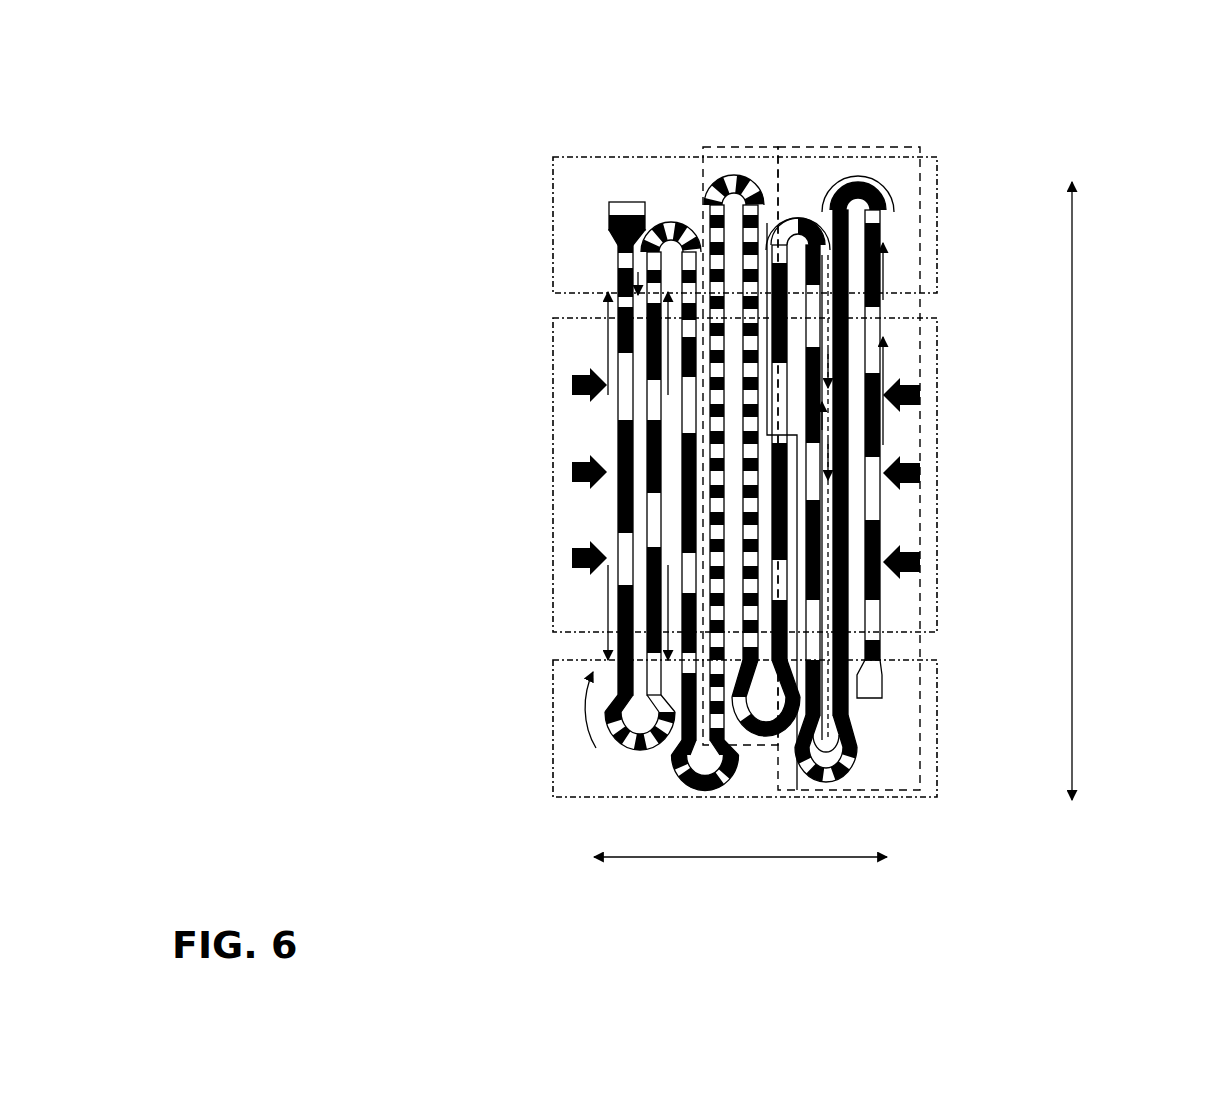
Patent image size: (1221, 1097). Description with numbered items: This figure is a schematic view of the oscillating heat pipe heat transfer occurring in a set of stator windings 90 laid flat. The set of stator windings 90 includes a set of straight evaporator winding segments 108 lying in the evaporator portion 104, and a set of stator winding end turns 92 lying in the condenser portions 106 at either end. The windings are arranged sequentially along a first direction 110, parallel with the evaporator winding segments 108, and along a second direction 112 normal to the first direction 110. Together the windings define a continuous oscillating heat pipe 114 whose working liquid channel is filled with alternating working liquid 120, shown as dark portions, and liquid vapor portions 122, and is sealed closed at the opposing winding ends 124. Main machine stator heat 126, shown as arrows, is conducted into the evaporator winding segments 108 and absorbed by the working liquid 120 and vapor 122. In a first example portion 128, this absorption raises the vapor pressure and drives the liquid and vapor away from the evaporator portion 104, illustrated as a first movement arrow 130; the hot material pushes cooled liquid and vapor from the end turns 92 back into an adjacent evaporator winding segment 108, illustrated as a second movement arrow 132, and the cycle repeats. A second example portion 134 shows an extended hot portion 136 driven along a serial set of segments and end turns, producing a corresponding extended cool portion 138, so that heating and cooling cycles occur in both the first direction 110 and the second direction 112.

The set of stator windings 90 is at (936, 367).
The set of stator winding end turns 92 is at (643, 750).
The evaporator portion 104 is at (930, 395).
The condenser portions 106 is at (937, 233).
The set of evaporator winding segments 108 is at (688, 612).
The first direction 110 is at (1073, 405).
The second direction 112 is at (733, 858).
The oscillating heat pipe 114 is at (898, 812).
The working liquid 120 is at (612, 216).
The liquid vapor portions 122 is at (622, 258).
The opposing winding ends 124 is at (618, 207).
The main machine stator heat 126 is at (570, 558).
The first example portion 128 is at (644, 186).
The first movement arrow 130 is at (652, 380).
The second movement arrow 132 is at (652, 232).
The second example portion 134 is at (914, 147).
The extended hot portion 136 is at (805, 145).
The extended cool portion 138 is at (728, 145).